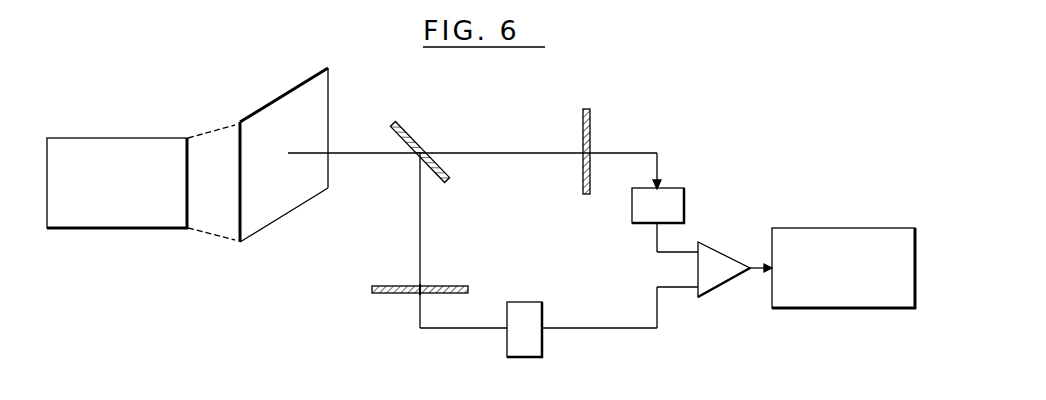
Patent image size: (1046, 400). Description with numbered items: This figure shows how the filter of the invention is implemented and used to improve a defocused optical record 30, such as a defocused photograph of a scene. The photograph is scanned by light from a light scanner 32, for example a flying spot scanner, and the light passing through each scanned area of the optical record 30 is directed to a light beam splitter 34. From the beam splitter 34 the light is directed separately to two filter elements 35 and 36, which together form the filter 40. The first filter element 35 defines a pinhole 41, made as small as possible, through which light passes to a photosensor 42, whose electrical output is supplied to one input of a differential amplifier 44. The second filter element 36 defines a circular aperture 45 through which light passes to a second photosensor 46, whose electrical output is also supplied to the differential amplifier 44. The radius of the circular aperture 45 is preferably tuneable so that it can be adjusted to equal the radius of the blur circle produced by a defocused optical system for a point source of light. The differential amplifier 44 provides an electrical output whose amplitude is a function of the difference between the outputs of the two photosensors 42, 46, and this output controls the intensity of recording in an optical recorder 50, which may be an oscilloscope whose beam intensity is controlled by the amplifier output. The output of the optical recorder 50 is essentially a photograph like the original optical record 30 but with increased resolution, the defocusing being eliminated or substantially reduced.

The defocused optical record 30 is at (260, 110).
The light scanner 32 is at (136, 137).
The light beam splitter 34 is at (413, 135).
The filter element 35 is at (590, 120).
The filter element 36 is at (383, 285).
The filter 40 is at (541, 239).
The pinhole 41 is at (589, 153).
The photosensor 42 is at (683, 188).
The differential amplifier 44 is at (710, 255).
The circular aperture 45 is at (423, 285).
The photosensor 46 is at (540, 303).
The optical recorder 50 is at (842, 228).